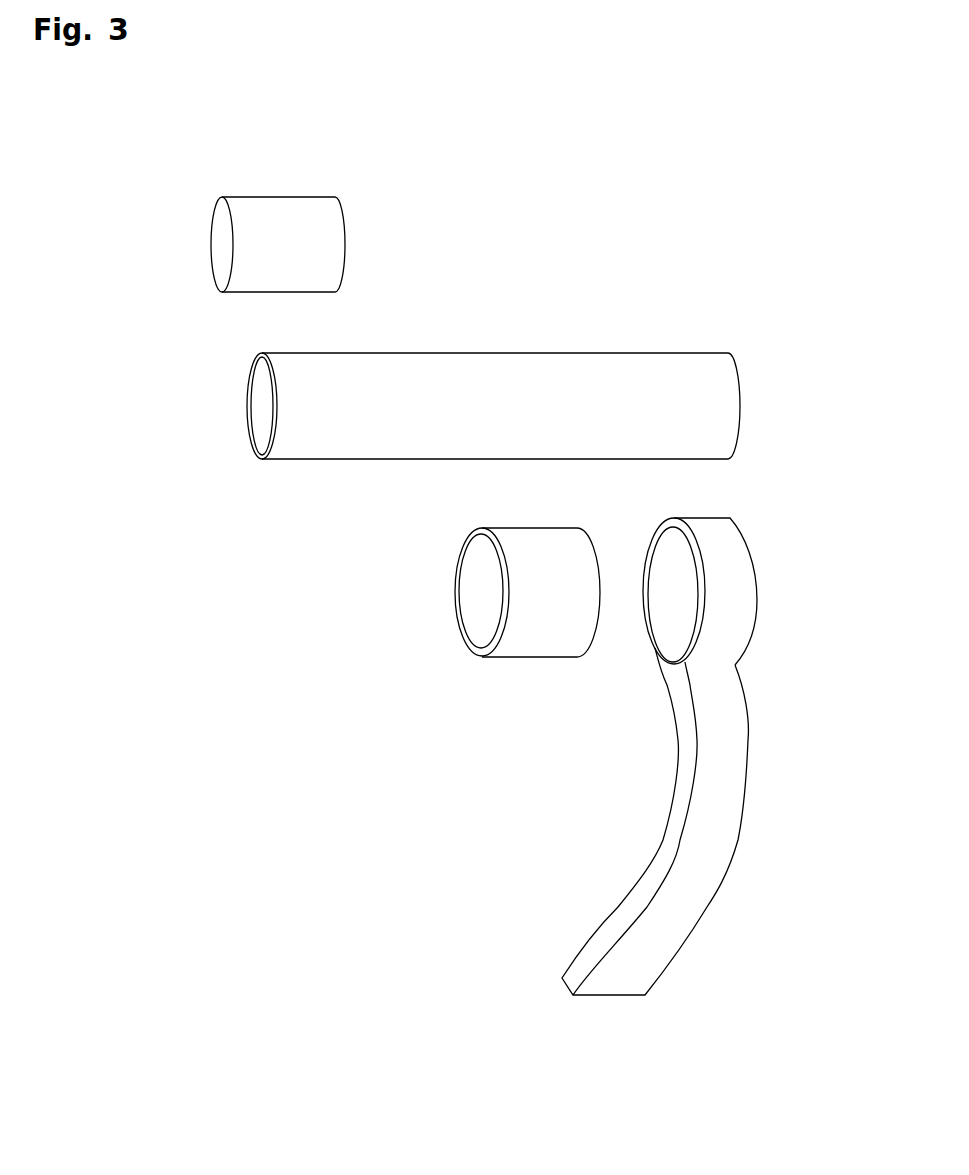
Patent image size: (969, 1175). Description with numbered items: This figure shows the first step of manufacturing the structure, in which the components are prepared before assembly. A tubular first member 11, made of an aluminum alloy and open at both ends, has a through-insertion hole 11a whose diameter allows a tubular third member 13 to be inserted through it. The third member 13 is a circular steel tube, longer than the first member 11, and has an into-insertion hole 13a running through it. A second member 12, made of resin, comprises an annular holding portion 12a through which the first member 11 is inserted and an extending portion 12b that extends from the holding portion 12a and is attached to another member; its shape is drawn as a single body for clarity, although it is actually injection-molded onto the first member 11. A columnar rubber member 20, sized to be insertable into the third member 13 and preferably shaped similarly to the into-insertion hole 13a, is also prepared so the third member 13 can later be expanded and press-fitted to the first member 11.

The rubber member 20 is at (322, 207).
The third member 13 is at (548, 362).
The into-insertion hole 13a is at (263, 407).
The first member 11 is at (543, 643).
The through-insertion hole 11a is at (475, 598).
The second member 12 is at (724, 756).
The holding portion 12a is at (757, 607).
The extending portion 12b is at (833, 628).